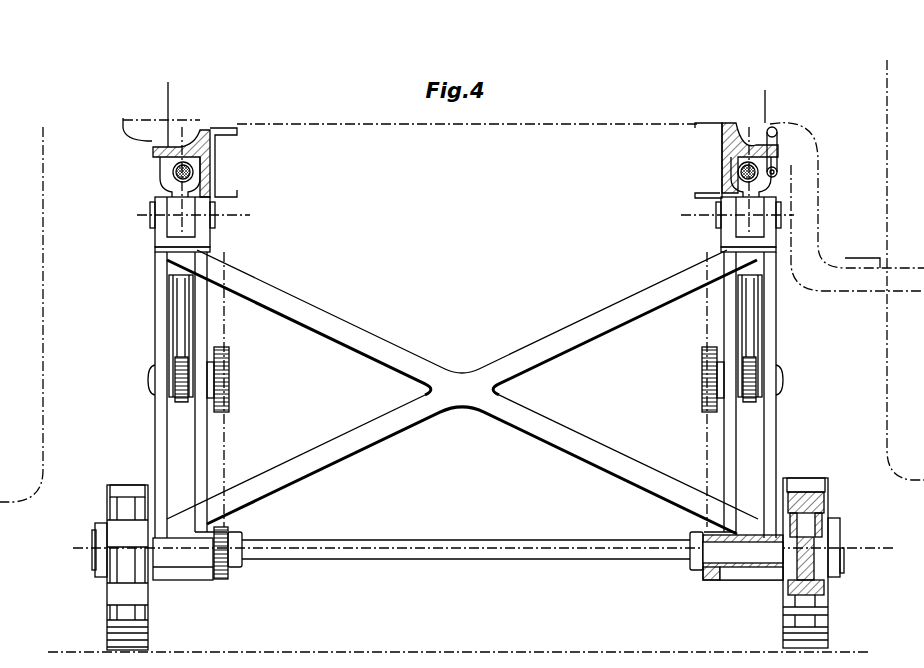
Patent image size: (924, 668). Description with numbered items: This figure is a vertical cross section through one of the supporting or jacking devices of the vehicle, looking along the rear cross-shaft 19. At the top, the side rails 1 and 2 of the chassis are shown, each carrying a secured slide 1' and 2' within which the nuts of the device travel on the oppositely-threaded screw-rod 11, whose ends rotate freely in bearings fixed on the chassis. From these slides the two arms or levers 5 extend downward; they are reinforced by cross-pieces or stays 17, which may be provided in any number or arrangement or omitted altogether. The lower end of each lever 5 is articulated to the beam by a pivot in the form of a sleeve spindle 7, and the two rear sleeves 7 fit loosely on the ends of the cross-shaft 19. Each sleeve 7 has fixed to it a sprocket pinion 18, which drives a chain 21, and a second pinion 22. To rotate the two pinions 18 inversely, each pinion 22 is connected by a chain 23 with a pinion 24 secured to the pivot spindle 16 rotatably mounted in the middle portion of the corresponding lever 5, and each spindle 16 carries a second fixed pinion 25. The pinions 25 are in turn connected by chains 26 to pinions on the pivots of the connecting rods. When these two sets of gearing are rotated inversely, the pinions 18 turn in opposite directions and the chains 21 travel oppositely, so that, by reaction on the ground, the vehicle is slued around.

The side rail 1 is at (235, 162).
The slide 1' is at (193, 146).
The side rail 2 is at (692, 160).
The slide 2' is at (750, 139).
The lever 5 is at (158, 438).
The pivot sleeve 7 is at (180, 570).
The screw-rod 11 is at (172, 178).
The pivot spindle 16 is at (152, 384).
The cross-pieces or stays 17 is at (468, 410).
The sprocket pinion 18 is at (106, 506).
The cross-shaft 19 is at (328, 560).
The chain 21 is at (118, 618).
The pinion 22 is at (222, 580).
The chain 23 is at (223, 442).
The pinion 24 is at (226, 393).
The pinion 25 is at (175, 370).
The chain 26 is at (180, 310).